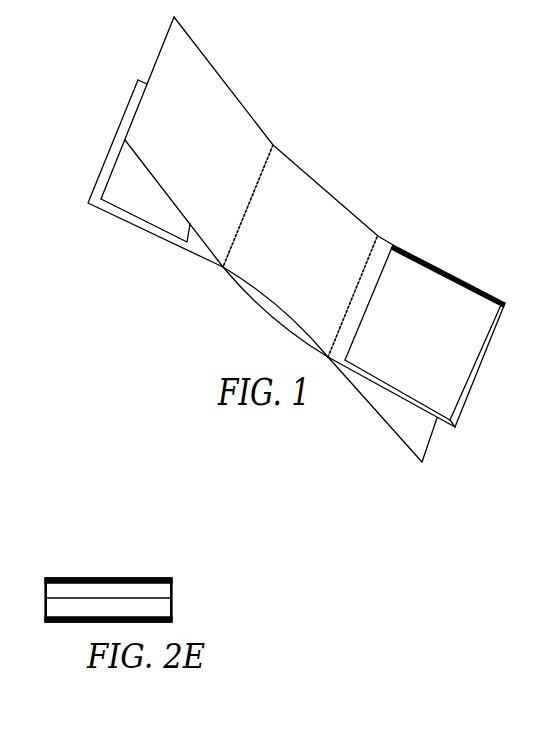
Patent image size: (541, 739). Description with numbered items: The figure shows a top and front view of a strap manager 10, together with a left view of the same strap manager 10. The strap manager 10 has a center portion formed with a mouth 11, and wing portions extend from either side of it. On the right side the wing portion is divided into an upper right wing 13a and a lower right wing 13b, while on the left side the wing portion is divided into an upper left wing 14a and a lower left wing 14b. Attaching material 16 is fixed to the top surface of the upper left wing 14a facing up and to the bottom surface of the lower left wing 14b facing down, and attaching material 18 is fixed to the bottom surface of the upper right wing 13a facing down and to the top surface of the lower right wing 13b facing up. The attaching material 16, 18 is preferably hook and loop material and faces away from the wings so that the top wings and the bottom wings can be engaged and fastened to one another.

In FIG. 1, the strap manager 10 is at (345, 131).
In FIG. 2E, the strap manager 10 is at (128, 549).
In FIG. 1, the mouth 11 is at (272, 312).
In FIG. 1, the upper right wing 13a is at (176, 119).
In FIG. 1, the lower right wing 13b is at (112, 163).
In FIG. 1, the upper left wing 14a is at (473, 392).
In FIG. 1, the lower left wing 14b is at (400, 435).
In FIG. 1, the attaching material 16 is at (408, 346).
In FIG. 2E, the attaching material 16 is at (85, 578).
In FIG. 1, the attaching material 18 is at (130, 195).